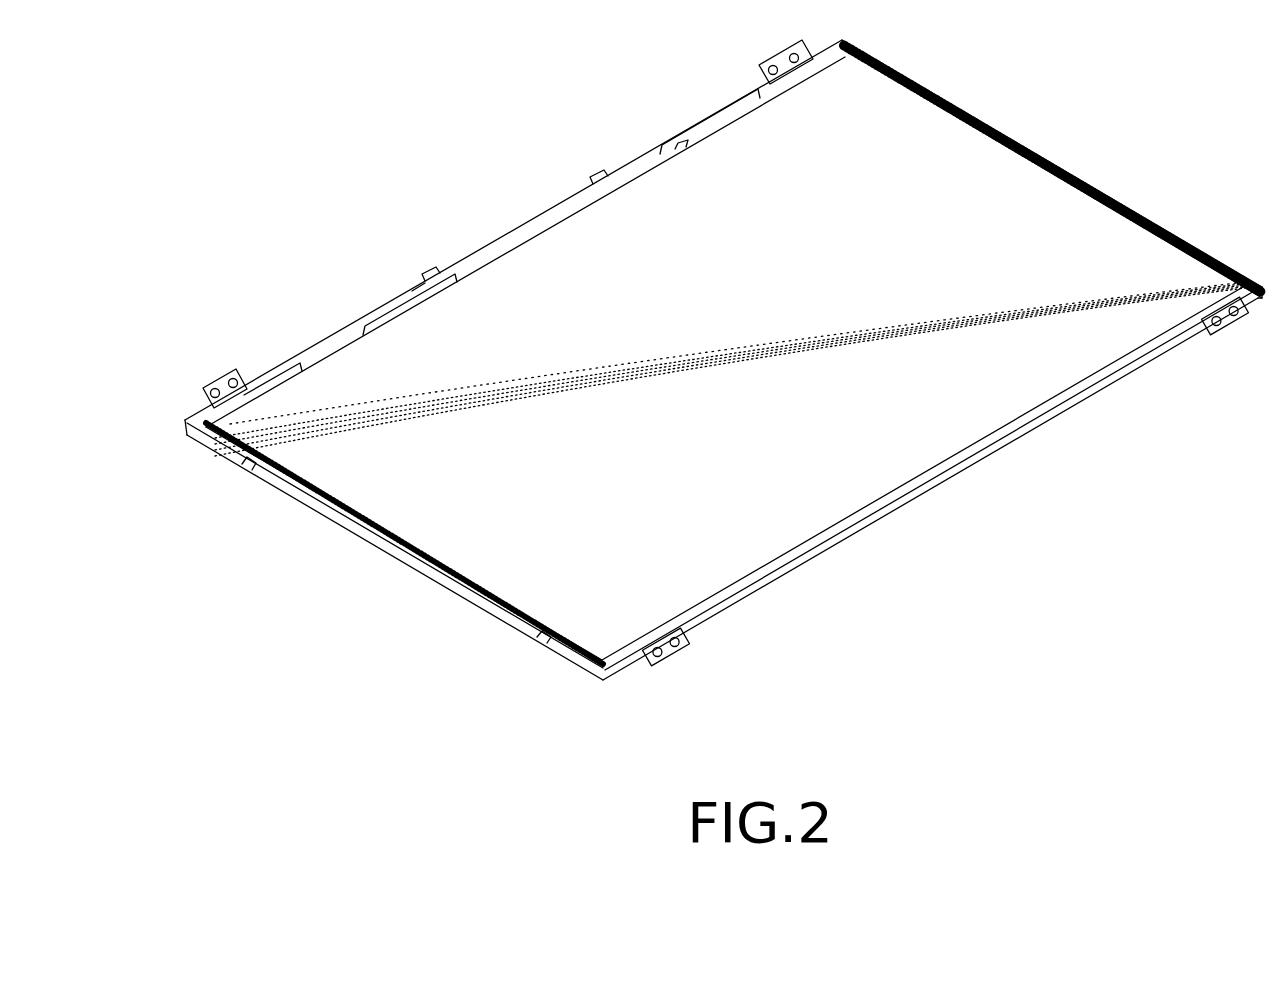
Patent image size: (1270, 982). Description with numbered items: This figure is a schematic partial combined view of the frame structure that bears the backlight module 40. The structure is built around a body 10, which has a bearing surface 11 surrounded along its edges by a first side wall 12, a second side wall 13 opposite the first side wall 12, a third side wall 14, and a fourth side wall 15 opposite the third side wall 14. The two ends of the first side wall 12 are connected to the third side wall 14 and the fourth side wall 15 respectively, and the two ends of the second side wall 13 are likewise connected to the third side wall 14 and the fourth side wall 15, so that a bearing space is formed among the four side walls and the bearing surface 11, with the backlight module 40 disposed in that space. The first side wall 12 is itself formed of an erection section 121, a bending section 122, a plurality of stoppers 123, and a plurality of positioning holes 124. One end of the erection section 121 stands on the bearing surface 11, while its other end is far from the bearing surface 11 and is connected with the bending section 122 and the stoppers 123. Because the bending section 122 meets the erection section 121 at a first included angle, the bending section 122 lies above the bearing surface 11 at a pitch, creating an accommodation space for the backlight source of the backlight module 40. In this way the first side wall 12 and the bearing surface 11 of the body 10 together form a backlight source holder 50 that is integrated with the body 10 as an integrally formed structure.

The body 10 is at (701, 366).
The bearing surface 11 is at (222, 382).
The first side wall 12 is at (448, 163).
The erection section 121 is at (263, 372).
The bending section 122 is at (337, 342).
The stoppers 123 is at (430, 280).
The positioning holes 124 is at (420, 282).
The second side wall 13 is at (988, 456).
The third side wall 14 is at (1118, 197).
The fourth side wall 15 is at (383, 553).
The backlight module 40 is at (988, 201).
The backlight source holder 50 is at (329, 172).